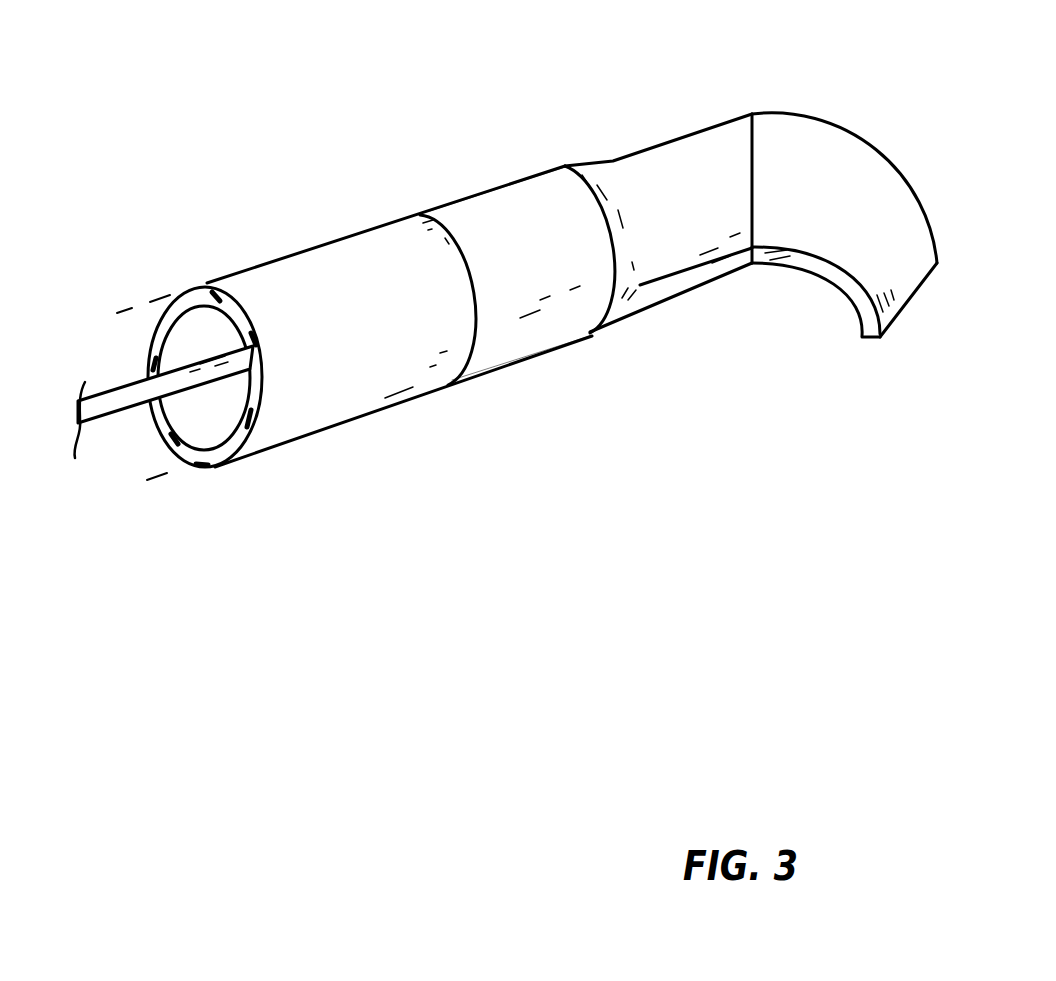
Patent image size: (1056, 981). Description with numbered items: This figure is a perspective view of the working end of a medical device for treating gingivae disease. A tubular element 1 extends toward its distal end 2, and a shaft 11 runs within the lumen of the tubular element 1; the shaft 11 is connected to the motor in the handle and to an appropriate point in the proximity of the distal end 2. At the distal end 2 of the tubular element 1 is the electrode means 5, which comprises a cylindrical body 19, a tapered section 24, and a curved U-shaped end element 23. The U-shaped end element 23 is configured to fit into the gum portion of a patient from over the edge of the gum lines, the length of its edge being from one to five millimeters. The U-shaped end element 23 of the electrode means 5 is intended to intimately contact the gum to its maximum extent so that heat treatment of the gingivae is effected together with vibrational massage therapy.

The tubular element 1 is at (287, 248).
The distal end 2 is at (418, 214).
The cylindrical body 19 is at (513, 177).
The tapered section 24 is at (597, 153).
The electrode means 5 is at (707, 284).
The curved U-shaped end element 23 is at (915, 187).
The shaft 11 is at (127, 398).